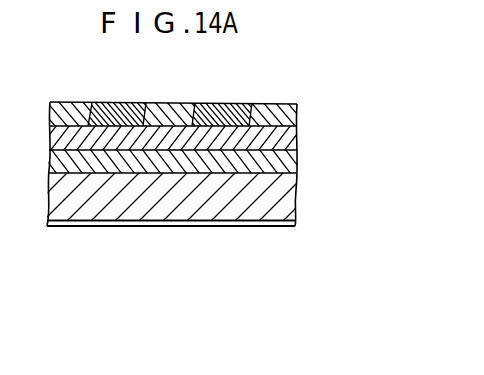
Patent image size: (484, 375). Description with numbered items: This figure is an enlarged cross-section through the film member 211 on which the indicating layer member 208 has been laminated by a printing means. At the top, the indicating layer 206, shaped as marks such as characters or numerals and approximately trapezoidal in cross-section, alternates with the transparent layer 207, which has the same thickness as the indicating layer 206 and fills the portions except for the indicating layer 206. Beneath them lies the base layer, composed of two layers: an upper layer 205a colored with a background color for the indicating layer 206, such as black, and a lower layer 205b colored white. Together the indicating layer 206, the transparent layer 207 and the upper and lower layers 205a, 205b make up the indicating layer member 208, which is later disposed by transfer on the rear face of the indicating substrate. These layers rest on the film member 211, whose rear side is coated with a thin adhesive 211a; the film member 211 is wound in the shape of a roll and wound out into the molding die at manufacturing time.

The indicating layer 206 is at (243, 106).
The transparent layer 207 is at (293, 114).
The upper layer 205a is at (295, 141).
The lower layer 205b is at (295, 164).
The indicating layer member 208 is at (370, 107).
The film member 211 is at (295, 198).
The adhesive 211a is at (263, 227).